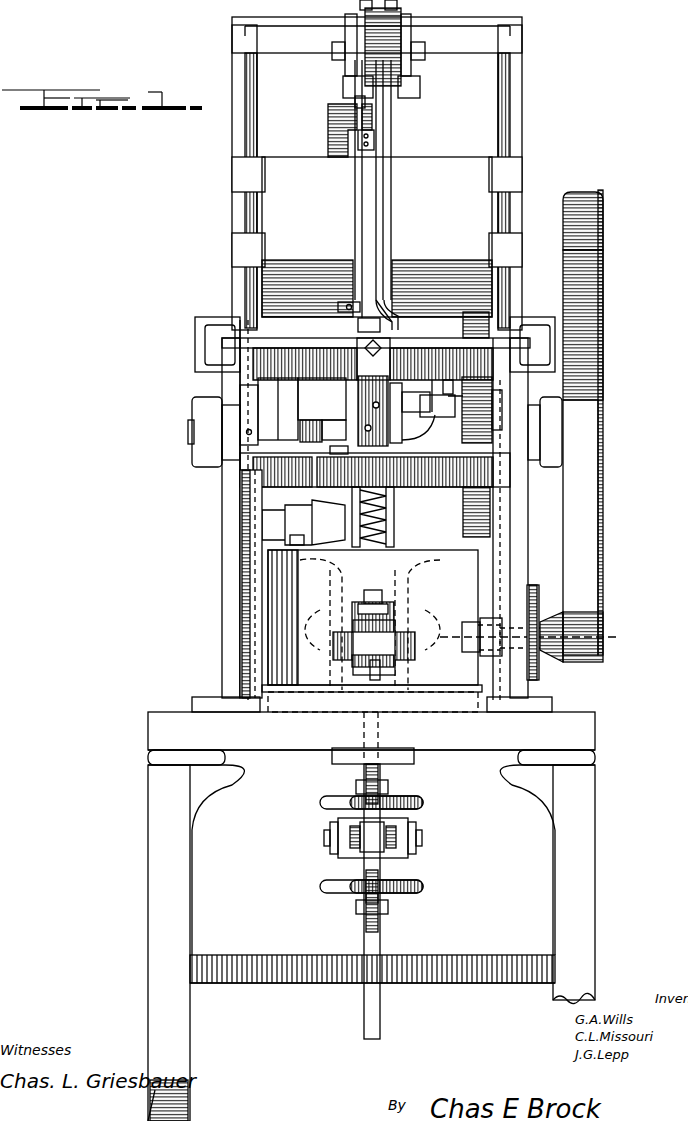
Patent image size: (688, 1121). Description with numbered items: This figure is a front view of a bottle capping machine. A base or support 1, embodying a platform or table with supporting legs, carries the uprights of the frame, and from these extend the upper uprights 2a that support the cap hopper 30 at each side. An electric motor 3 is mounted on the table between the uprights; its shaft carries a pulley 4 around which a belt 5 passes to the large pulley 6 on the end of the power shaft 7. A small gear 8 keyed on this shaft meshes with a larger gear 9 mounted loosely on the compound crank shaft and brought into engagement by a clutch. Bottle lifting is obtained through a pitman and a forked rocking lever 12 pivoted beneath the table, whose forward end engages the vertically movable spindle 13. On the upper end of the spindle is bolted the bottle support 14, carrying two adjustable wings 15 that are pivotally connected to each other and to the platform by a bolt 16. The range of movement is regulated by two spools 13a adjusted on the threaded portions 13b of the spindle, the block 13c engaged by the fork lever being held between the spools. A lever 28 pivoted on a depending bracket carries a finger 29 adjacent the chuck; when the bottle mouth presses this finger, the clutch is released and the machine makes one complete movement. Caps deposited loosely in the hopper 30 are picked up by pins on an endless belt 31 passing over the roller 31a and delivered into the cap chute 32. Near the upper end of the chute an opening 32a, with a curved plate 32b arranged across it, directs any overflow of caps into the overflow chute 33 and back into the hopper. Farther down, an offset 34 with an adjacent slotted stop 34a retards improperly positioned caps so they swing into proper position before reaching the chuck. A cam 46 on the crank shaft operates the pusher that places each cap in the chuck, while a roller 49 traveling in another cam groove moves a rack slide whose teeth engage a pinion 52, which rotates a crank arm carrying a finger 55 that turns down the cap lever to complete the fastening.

The base or support 1 is at (480, 722).
The uprights 2a is at (242, 82).
The electric motor 3 is at (422, 578).
The pulley 4 is at (603, 612).
The belt 5 is at (598, 518).
The large pulley 6 is at (598, 215).
The power shaft 7 is at (605, 270).
The small gear 8 is at (490, 318).
The larger gear 9 is at (464, 502).
The forked rocking lever 12 is at (400, 838).
The spindle 13 is at (372, 932).
The spools 13a is at (323, 893).
The threaded portions 13b is at (339, 914).
The block 13c is at (360, 862).
The bottle support 14 is at (385, 648).
The adjustable wings 15 is at (360, 612).
The bolt 16 is at (363, 590).
The lever 28 is at (447, 393).
The finger 29 is at (360, 437).
The hopper 30 is at (377, 237).
The endless belt 31 is at (395, 66).
The roller 31a is at (454, 41).
The cap chute 32 is at (377, 148).
The opening 32a is at (353, 105).
The curved plate 32b is at (372, 117).
The overflow chute 33 is at (330, 131).
The offset 34 is at (377, 316).
The stop 34a is at (357, 306).
The cam 46 is at (333, 390).
The roller 49 is at (293, 400).
The pinion 52 is at (370, 418).
The finger 55 is at (318, 425).